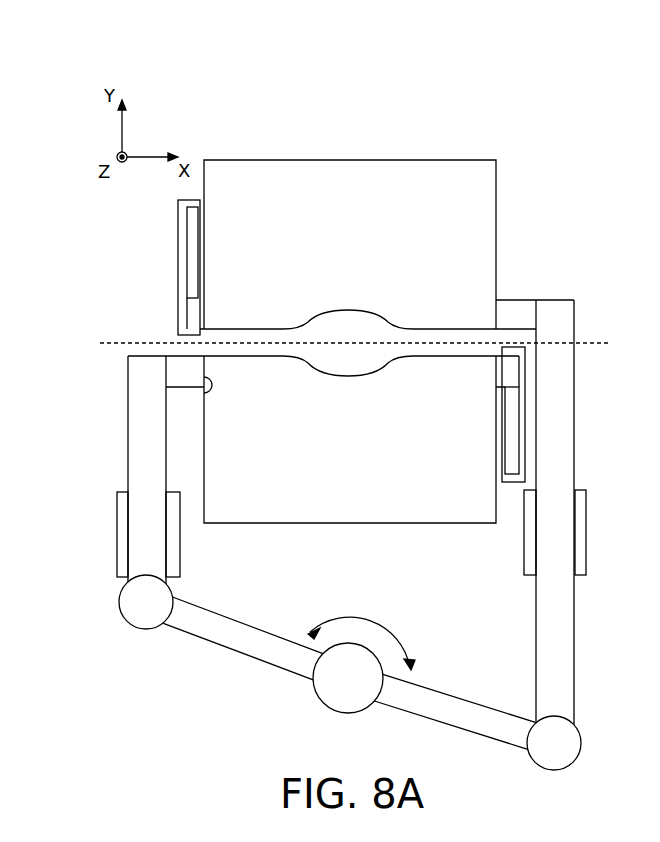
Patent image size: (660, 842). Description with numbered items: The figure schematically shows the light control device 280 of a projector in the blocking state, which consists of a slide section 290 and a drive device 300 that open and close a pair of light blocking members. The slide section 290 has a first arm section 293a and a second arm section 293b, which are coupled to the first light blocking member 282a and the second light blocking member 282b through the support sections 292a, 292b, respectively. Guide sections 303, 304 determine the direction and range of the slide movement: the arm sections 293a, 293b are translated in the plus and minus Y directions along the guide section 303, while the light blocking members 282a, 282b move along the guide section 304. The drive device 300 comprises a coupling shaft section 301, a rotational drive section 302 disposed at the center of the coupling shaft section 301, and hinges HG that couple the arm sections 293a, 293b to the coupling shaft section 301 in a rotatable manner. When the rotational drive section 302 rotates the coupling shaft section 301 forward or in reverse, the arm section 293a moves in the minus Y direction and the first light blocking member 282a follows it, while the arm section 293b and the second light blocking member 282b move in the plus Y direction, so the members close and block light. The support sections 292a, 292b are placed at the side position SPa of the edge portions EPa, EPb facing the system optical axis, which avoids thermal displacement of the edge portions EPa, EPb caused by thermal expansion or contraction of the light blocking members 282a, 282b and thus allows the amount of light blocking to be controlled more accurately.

The light control device 280 is at (540, 140).
The slide section 290 is at (540, 211).
The first light blocking member 282a is at (405, 180).
The second light blocking member 282b is at (313, 512).
The support section 292a is at (522, 316).
The support section 292b is at (188, 366).
The first arm section 293a is at (557, 441).
The second arm section 293b is at (141, 431).
The guide section 304 is at (182, 252).
The guide section 303 is at (178, 560).
The drive device 300 is at (188, 690).
The coupling shaft section 301 is at (257, 652).
The rotational drive section 302 is at (328, 692).
The hinge HG is at (137, 618).
The side position SPa is at (502, 310).
The edge portion EPa is at (287, 334).
The edge portion EPb is at (348, 359).